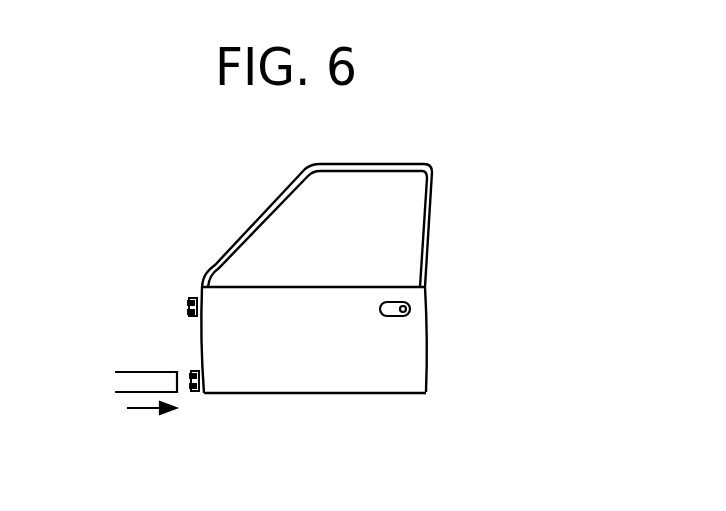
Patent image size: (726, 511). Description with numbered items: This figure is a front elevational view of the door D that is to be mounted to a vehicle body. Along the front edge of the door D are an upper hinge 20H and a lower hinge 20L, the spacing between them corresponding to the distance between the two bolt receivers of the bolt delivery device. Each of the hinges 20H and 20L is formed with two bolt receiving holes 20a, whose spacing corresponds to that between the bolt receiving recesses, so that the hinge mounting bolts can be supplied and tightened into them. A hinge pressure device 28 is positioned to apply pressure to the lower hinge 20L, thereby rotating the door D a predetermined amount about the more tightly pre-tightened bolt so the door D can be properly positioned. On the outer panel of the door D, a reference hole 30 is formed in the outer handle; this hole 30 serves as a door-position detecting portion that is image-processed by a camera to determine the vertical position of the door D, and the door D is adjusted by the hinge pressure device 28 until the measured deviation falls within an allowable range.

The door D is at (252, 182).
The reference hole 30 is at (410, 306).
The upper hinge 20H is at (189, 304).
The lower hinge 20L is at (193, 391).
The bolt receiving holes 20a is at (190, 297).
The hinge pressure device 28 is at (125, 393).